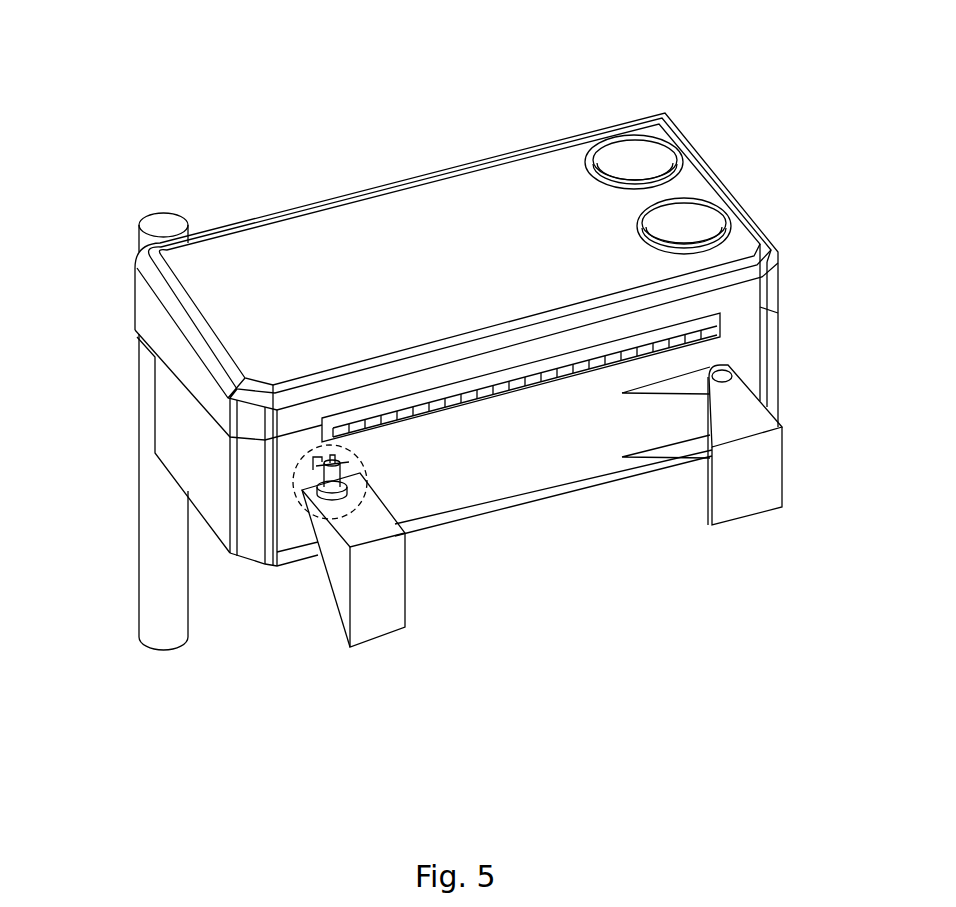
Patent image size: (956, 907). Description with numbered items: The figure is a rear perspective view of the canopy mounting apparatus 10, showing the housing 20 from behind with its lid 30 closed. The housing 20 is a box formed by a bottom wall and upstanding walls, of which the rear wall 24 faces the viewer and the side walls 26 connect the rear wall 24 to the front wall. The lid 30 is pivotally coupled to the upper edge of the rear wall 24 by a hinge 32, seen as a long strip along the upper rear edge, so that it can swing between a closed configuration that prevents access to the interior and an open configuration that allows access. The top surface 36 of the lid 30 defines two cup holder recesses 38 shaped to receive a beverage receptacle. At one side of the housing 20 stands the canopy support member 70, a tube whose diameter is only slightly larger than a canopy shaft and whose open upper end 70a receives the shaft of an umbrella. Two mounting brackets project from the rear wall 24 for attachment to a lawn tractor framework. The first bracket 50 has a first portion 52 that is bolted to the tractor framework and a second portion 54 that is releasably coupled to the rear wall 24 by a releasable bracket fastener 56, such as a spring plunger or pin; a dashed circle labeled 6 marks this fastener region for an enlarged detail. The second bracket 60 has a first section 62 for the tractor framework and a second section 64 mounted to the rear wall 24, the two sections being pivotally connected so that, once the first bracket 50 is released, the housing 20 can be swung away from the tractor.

The canopy mounting apparatus 10 is at (324, 86).
The housing 20 is at (741, 155).
The rear wall 24 is at (527, 473).
The side walls 26 is at (173, 423).
The lid 30 is at (459, 190).
The hinge 32 is at (660, 338).
The top surface 36 is at (384, 280).
The cup holder recesses 38 is at (633, 160).
The first bracket 50 is at (328, 651).
The first portion 52 is at (393, 606).
The second portion 54 is at (317, 497).
The releasable bracket fastener 56 is at (322, 456).
The detail region of FIG. 6 is at (377, 479).
The second bracket 60 is at (700, 546).
The first section 62 is at (770, 487).
The second section 64 is at (683, 452).
The canopy support member 70 is at (147, 577).
The open upper end 70a is at (163, 218).